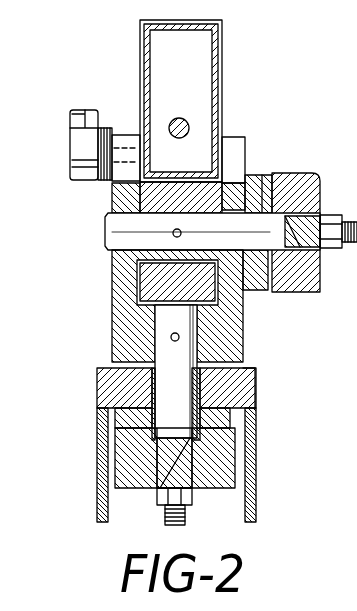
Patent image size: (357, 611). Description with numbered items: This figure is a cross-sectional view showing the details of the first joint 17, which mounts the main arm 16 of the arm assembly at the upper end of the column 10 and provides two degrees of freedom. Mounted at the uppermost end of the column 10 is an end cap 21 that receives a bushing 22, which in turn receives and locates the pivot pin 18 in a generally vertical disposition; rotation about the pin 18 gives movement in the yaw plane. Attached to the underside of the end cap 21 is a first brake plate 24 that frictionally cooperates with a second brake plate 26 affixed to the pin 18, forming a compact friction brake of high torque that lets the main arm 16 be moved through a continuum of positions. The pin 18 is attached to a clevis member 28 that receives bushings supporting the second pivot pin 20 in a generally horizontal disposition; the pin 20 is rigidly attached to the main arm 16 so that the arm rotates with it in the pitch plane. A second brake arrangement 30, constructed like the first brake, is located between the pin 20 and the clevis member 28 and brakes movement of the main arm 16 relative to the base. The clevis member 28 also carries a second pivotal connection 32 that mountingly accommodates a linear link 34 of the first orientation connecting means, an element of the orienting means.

The column 10 is at (258, 456).
The main arm 16 is at (222, 58).
The first joint 17 is at (245, 96).
The pivot pin 18 is at (178, 402).
The pivot pin 20 is at (117, 232).
The end cap 21 is at (253, 366).
The bushing 22 is at (130, 388).
The first brake plate 24 is at (112, 421).
The second brake plate 26 is at (100, 432).
The clevis member 28 is at (110, 312).
The second brake arrangement 30 is at (259, 302).
The second pivotal connection 32 is at (98, 180).
The linear link 34 is at (72, 148).